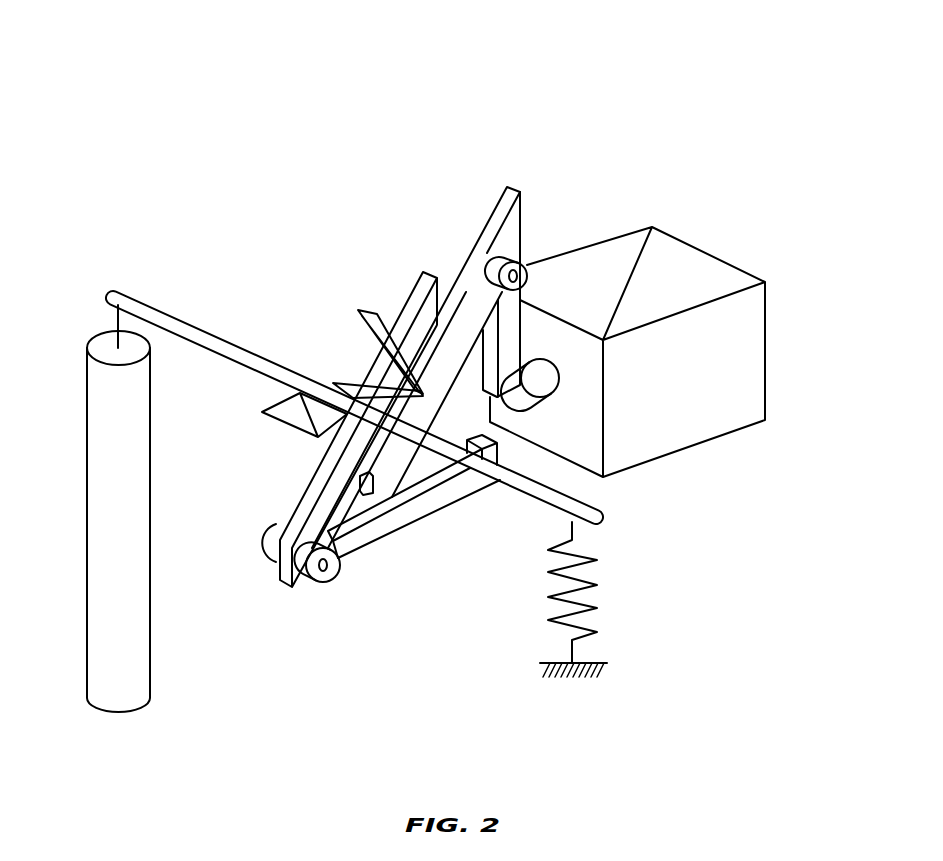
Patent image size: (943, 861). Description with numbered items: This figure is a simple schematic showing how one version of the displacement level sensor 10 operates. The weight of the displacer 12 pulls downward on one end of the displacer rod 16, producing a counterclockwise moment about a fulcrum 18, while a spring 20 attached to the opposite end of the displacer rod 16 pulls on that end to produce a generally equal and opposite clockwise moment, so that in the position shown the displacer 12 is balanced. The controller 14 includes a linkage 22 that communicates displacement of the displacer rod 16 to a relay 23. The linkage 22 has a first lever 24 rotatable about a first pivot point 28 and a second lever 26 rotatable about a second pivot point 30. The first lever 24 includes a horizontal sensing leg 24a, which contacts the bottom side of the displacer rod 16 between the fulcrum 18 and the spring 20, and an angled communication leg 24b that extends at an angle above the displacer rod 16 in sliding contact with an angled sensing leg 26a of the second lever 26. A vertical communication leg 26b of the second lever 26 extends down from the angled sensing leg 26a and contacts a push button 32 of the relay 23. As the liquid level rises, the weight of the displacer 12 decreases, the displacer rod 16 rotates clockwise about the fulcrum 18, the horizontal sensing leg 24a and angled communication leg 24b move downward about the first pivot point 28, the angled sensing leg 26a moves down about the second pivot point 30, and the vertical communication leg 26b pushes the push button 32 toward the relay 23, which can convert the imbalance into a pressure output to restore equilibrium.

The displacement level sensor 10 is at (572, 43).
The displacer 12 is at (142, 678).
The controller 14 is at (676, 220).
The displacer rod 16 is at (240, 362).
The fulcrum 18 is at (293, 422).
The spring 20 is at (590, 580).
The linkage 22 is at (405, 283).
The relay 23 is at (723, 277).
The first lever 24 is at (411, 530).
The horizontal sensing leg 24a is at (463, 482).
The angled communication leg 24b is at (307, 493).
The second lever 26 is at (524, 194).
The angled sensing leg 26a is at (463, 277).
The vertical communication leg 26b is at (490, 343).
The first pivot point 28 is at (329, 577).
The second pivot point 30 is at (525, 265).
The push button 32 is at (545, 385).